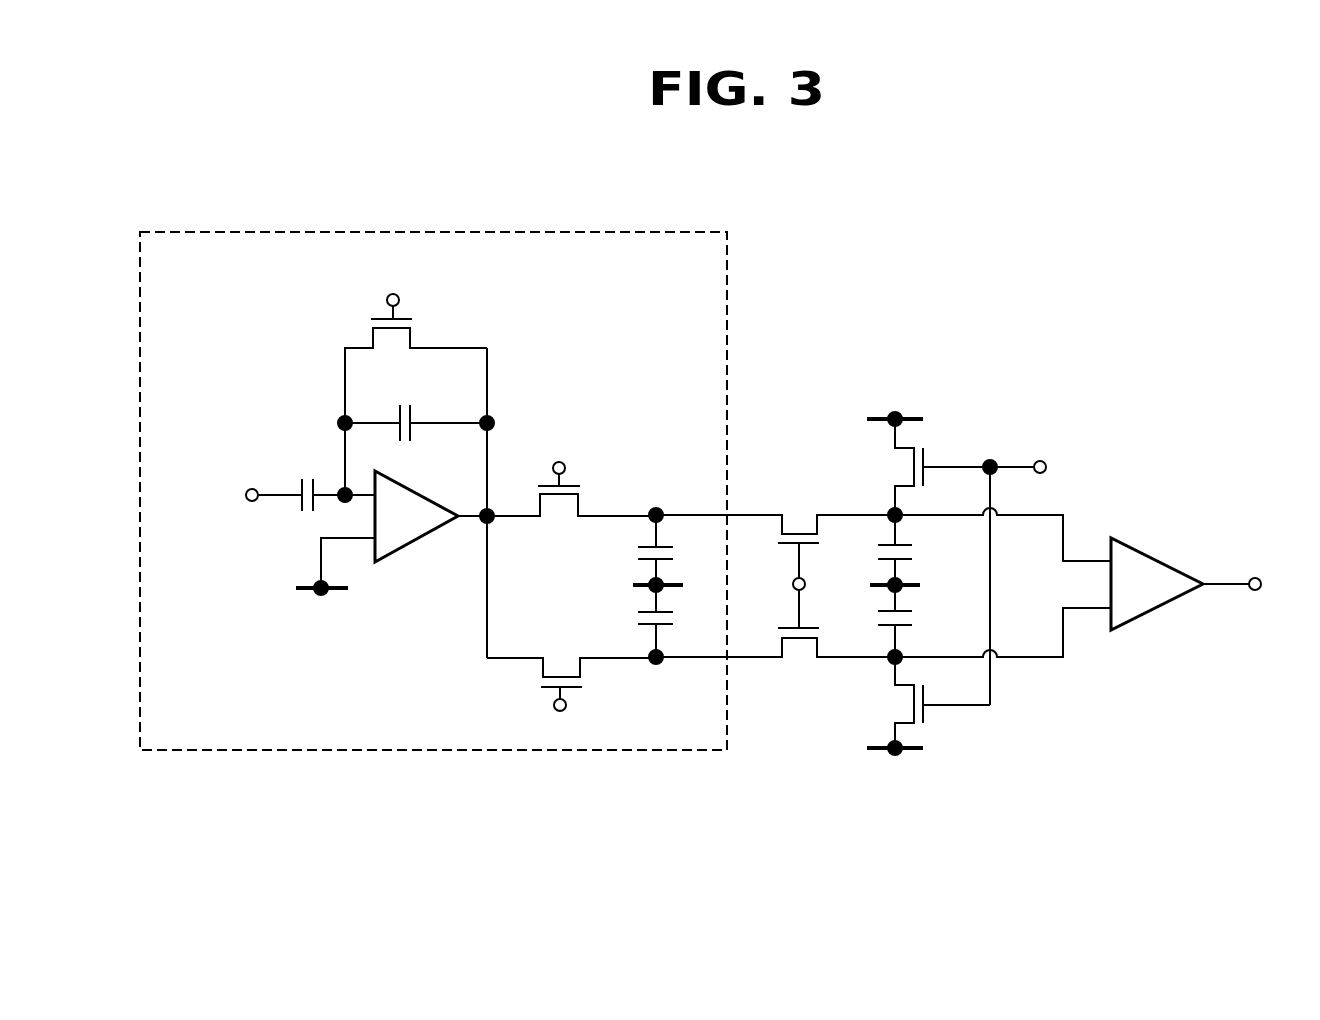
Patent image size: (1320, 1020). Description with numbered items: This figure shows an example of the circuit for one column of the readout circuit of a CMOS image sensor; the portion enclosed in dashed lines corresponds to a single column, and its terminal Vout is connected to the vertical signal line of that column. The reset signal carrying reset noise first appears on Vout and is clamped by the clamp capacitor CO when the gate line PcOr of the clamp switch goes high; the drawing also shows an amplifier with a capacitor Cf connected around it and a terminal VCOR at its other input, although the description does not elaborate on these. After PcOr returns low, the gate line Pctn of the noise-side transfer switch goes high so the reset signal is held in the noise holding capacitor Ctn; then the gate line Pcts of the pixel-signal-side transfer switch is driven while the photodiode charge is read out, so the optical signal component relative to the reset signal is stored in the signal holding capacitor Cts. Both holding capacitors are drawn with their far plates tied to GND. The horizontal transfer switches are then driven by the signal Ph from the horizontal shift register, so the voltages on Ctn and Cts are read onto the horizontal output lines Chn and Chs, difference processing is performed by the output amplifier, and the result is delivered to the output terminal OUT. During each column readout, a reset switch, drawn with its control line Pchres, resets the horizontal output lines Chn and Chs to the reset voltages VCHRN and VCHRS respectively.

The vertical signal line terminal Vout is at (244, 497).
The clamp capacitor CO is at (318, 476).
The feedback capacitor Cf is at (416, 410).
The gate line of clamp switch PcOr is at (416, 345).
The clamp reference voltage VCOR is at (332, 585).
The gate line of noise-side transfer switch Pctn is at (571, 474).
The gate line of pixel-signal-side transfer switch Pcts is at (571, 701).
The noise holding capacitor Ctn is at (634, 550).
The signal holding capacitor Cts is at (635, 621).
The ground GND is at (777, 588).
The horizontal transfer switch signal Ph is at (775, 586).
The horizontal output line (noise side) Chn is at (870, 550).
The horizontal output line (signal side) Chs is at (870, 621).
The reset voltage for noise horizontal output line VCHRN is at (895, 449).
The reset voltage for signal horizontal output line VCHRS is at (895, 722).
The horizontal line reset switch Pchres is at (1000, 569).
The output terminal OUT is at (1213, 584).